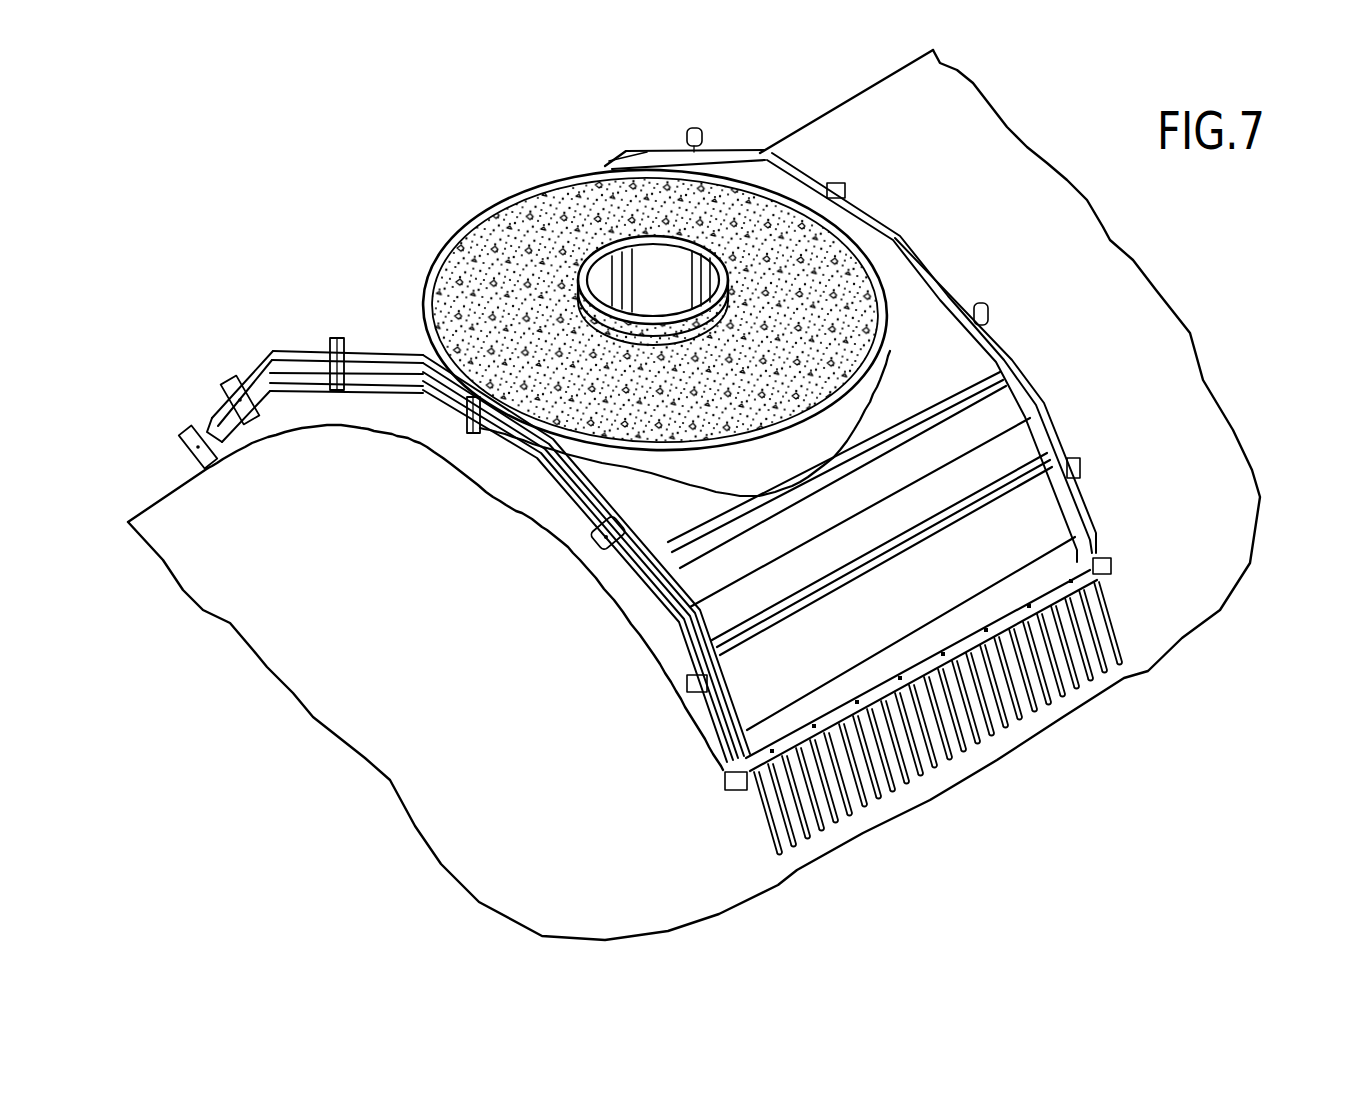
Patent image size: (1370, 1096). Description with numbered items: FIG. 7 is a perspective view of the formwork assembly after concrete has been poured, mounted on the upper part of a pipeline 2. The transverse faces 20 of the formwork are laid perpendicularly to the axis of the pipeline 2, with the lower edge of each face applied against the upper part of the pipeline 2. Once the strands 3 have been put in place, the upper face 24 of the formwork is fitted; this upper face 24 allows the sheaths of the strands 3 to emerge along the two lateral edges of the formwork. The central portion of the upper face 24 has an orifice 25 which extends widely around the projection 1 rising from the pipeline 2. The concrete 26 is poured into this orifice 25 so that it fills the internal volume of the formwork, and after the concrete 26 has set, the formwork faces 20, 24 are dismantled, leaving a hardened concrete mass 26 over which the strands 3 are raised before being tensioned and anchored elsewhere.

The projection 1 is at (590, 294).
The pipeline 2 is at (1188, 567).
The strands 3 is at (1043, 703).
The transverse faces 20 is at (1038, 432).
The upper face 24 is at (945, 368).
The orifice 25 is at (600, 173).
The concrete 26 is at (507, 245).